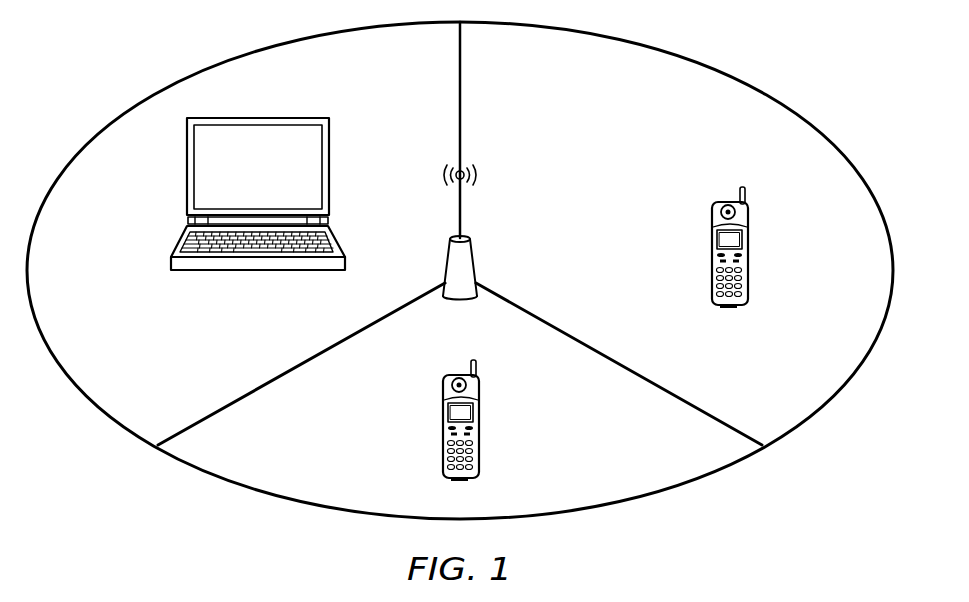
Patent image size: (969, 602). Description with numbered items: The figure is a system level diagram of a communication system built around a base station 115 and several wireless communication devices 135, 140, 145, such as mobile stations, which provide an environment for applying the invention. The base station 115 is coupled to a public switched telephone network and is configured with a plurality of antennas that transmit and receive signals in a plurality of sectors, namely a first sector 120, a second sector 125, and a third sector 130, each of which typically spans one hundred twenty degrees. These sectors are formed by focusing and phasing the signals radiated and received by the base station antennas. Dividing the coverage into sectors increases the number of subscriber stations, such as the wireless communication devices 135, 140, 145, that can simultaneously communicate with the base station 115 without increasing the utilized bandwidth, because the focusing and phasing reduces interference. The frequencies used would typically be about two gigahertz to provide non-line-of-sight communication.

The base station 115 is at (479, 267).
The first sector 120 is at (512, 59).
The second sector 125 is at (708, 449).
The third sector 130 is at (188, 413).
The wireless communication device 135 is at (187, 168).
The wireless communication device 140 is at (749, 253).
The wireless communication device 145 is at (479, 425).